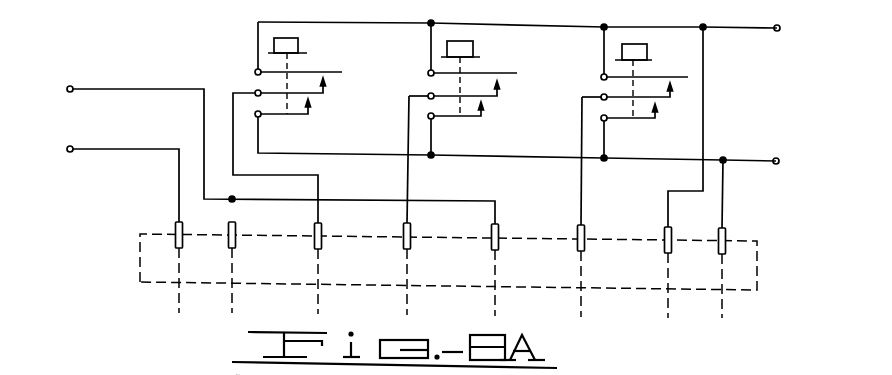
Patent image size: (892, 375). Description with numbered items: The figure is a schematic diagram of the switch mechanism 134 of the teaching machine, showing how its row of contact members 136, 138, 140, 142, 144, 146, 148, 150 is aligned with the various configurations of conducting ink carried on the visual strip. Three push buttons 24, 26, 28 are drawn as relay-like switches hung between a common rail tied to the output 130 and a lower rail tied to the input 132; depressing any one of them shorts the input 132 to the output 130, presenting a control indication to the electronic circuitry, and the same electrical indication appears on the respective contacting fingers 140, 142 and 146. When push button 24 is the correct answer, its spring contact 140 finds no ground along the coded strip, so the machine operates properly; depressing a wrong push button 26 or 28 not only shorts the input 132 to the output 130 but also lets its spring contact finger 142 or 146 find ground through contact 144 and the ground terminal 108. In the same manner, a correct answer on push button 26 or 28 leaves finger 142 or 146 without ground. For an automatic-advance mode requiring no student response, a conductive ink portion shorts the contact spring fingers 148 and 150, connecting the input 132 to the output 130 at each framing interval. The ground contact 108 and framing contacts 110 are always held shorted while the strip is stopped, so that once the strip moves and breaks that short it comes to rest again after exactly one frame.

The push button 24 is at (299, 49).
The push button 26 is at (472, 52).
The push button 28 is at (645, 55).
The ground terminal 108 is at (70, 92).
The framing contacts 110 is at (70, 152).
The output 130 is at (777, 25).
The input 132 is at (776, 164).
The switch mechanism 134 is at (228, 38).
The contact member 136 is at (175, 229).
The contact member 138 is at (234, 230).
The spring contact 140 is at (320, 231).
The spring contact finger 142 is at (409, 232).
The contact 144 is at (497, 233).
The spring finger 146 is at (583, 234).
The contact spring finger 148 is at (670, 236).
The contact spring finger 150 is at (724, 237).